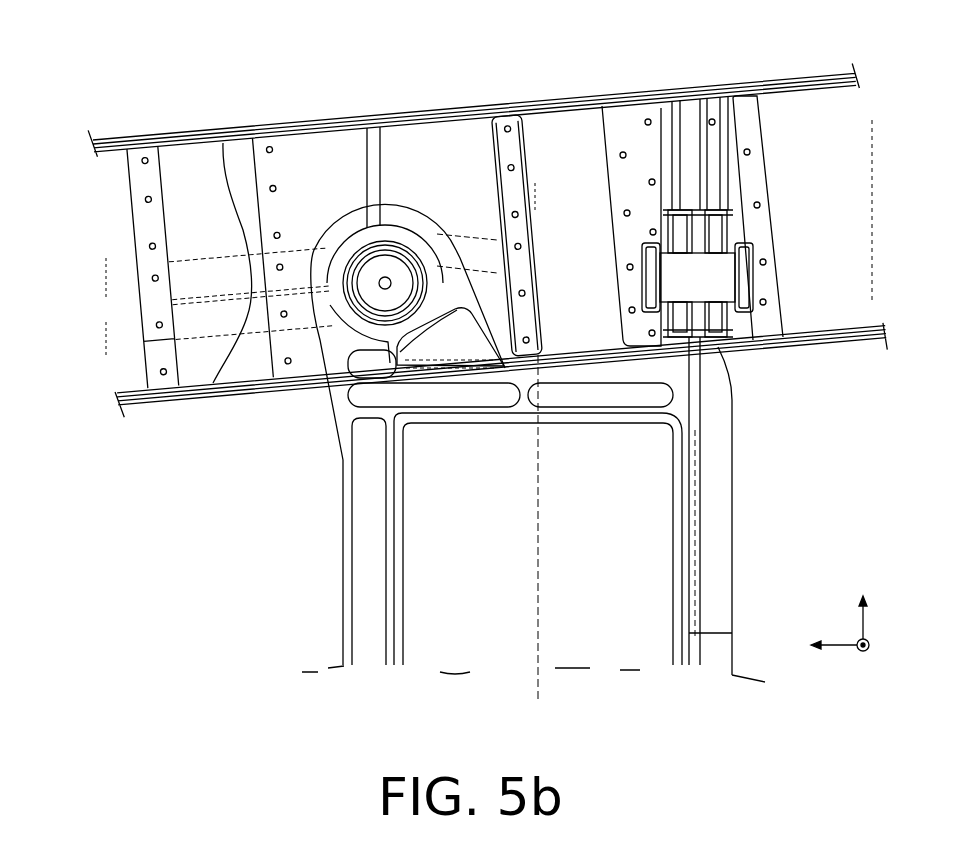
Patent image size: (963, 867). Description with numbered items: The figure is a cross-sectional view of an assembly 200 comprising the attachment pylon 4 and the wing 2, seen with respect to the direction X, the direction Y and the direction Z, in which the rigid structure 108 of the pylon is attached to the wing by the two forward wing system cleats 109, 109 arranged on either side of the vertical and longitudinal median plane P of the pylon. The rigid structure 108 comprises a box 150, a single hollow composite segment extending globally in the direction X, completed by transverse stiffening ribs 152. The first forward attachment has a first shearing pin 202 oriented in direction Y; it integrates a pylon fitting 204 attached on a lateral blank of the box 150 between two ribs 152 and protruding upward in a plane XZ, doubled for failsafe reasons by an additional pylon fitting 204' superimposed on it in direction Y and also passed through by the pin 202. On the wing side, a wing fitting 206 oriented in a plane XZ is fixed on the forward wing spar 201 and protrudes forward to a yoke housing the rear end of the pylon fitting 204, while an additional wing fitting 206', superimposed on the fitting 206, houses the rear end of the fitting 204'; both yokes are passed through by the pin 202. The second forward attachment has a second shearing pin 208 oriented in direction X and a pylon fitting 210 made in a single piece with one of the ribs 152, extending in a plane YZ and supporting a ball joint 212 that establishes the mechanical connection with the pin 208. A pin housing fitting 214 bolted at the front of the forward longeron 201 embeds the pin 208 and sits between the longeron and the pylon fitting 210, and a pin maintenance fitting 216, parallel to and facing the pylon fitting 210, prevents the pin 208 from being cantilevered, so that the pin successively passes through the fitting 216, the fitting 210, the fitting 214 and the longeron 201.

The assembly 200 is at (113, 101).
The wing 2 is at (311, 112).
The pin maintenance fitting 216 is at (197, 157).
The pin housing fitting 214 is at (376, 126).
The forward wing system cleat 109 is at (447, 130).
The forward wing spar 201 is at (563, 122).
The wing fitting 206 is at (640, 247).
The additional wing fitting 206' is at (777, 224).
The first shearing pin 202 is at (728, 272).
The ball joint 212 is at (348, 236).
The second shearing pin 208 is at (390, 263).
The pylon fitting 210 is at (340, 393).
The pylon fitting 204 is at (615, 511).
The additional pylon fitting 204' is at (772, 509).
The box 150 is at (407, 587).
The transverse stiffening rib 152 is at (370, 648).
The rigid structure 108 is at (285, 525).
The attachment pylon 4 is at (222, 497).
The vertical and longitudinal median plane P is at (540, 693).
The direction X is at (874, 653).
The direction Y is at (824, 654).
The direction Z is at (875, 608).